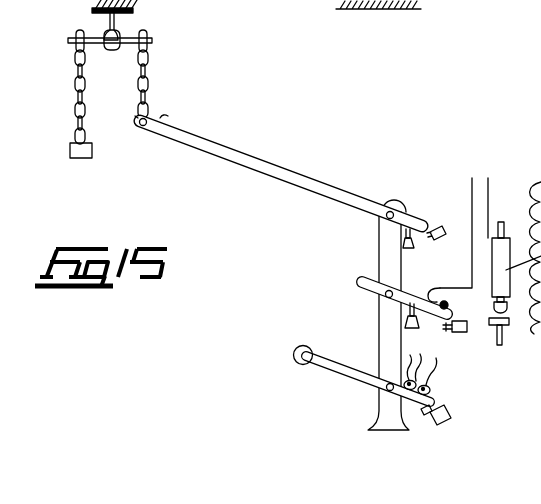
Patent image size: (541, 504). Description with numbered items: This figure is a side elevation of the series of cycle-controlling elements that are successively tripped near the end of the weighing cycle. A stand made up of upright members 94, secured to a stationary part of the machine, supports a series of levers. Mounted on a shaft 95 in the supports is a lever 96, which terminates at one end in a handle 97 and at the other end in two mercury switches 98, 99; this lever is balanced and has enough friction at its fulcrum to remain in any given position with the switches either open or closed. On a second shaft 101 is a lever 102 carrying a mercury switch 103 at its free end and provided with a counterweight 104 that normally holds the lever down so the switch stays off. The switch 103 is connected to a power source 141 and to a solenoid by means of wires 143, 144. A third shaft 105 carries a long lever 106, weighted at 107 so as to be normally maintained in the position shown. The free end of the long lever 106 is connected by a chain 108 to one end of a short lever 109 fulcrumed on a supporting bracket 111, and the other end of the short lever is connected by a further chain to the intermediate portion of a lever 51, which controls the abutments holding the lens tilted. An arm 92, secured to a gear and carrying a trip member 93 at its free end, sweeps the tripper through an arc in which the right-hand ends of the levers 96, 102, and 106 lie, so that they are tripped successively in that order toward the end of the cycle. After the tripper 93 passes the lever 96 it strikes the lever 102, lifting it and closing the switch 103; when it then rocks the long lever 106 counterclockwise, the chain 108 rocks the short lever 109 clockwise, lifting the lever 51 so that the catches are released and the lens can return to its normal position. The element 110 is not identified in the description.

The ceiling bracket 110 is at (112, 22).
The short lever 109 is at (128, 42).
The chain 108 is at (150, 82).
The supporting bracket 111 is at (78, 94).
The lever 51 is at (92, 152).
The long lever 106 is at (302, 178).
The third shaft 105 is at (385, 220).
The weight 107 is at (424, 251).
The power source 141 is at (470, 210).
The wire 144 is at (462, 272).
The lever 102 is at (362, 282).
The second shaft 101 is at (384, 293).
The mercury switch 103 is at (440, 292).
The wire 143 is at (466, 300).
The counterweight 104 is at (428, 332).
The mercury switch 99 is at (413, 329).
The upright members 94 is at (392, 318).
The handle 97 is at (300, 362).
The lever 96 is at (357, 377).
The shaft 95 is at (370, 405).
The mercury switch 98 is at (438, 394).
The arm 92 is at (452, 413).
The trip member 93 is at (425, 416).